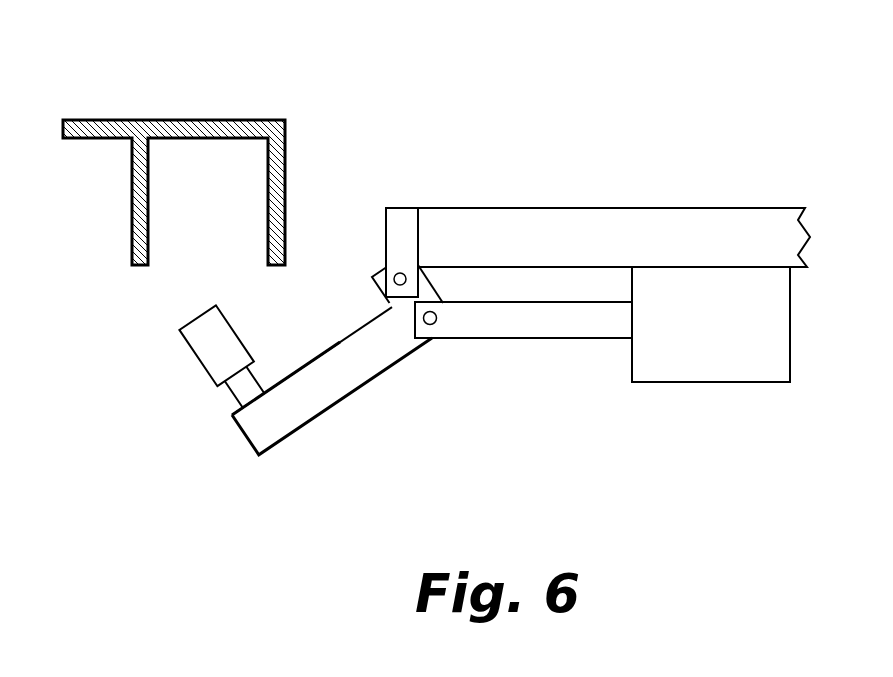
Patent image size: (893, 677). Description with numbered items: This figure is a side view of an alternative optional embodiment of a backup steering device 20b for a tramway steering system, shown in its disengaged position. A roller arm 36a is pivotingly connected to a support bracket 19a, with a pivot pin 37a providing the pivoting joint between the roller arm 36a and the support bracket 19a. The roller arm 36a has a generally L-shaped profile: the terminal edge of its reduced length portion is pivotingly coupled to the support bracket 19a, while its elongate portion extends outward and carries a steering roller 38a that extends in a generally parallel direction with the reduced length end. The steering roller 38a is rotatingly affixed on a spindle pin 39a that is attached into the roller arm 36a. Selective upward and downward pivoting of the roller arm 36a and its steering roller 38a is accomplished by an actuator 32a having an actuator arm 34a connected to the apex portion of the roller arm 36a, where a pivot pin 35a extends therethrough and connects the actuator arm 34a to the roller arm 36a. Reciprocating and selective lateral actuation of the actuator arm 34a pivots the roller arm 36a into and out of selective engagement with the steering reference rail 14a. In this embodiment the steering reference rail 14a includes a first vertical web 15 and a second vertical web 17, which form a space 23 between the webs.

The steering reference rail 14a is at (245, 120).
The first vertical web 15 is at (287, 178).
The second vertical web 17 is at (132, 196).
The space 23 is at (214, 216).
The backup steering device 20b is at (478, 145).
The support bracket 19a is at (598, 237).
The actuator 32a is at (711, 324).
The actuator arm 34a is at (538, 339).
The pivot pin 35a is at (432, 325).
The roller arm 36a is at (308, 425).
The pivot pin 37a is at (406, 279).
The steering roller 38a is at (198, 353).
The spindle pin 39a is at (228, 395).